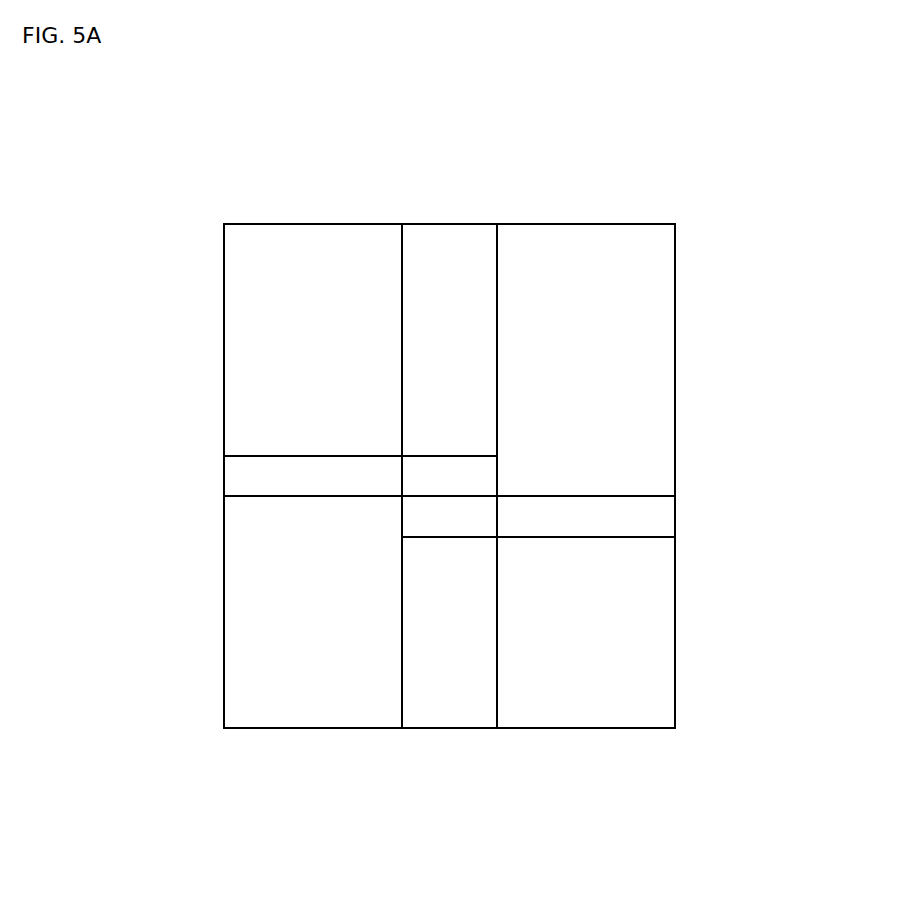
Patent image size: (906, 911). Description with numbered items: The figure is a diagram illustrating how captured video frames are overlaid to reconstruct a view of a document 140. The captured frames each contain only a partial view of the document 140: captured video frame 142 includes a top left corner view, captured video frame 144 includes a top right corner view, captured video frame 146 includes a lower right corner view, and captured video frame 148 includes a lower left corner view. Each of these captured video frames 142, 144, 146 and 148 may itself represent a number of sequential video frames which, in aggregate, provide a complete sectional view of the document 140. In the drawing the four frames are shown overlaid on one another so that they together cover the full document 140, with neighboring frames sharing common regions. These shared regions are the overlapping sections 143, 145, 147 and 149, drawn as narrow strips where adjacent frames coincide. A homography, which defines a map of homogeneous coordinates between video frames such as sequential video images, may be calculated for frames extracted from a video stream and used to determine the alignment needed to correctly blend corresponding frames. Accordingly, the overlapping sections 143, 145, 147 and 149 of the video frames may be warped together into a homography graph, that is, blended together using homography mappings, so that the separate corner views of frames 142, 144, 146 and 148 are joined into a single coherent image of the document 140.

The document 140 is at (638, 223).
The captured video frame 142 is at (313, 340).
The overlapping section 143 is at (450, 223).
The captured video frame 144 is at (586, 360).
The overlapping section 145 is at (675, 517).
The captured video frame 146 is at (586, 632).
The overlapping section 147 is at (455, 728).
The captured video frame 148 is at (313, 612).
The overlapping section 149 is at (224, 475).